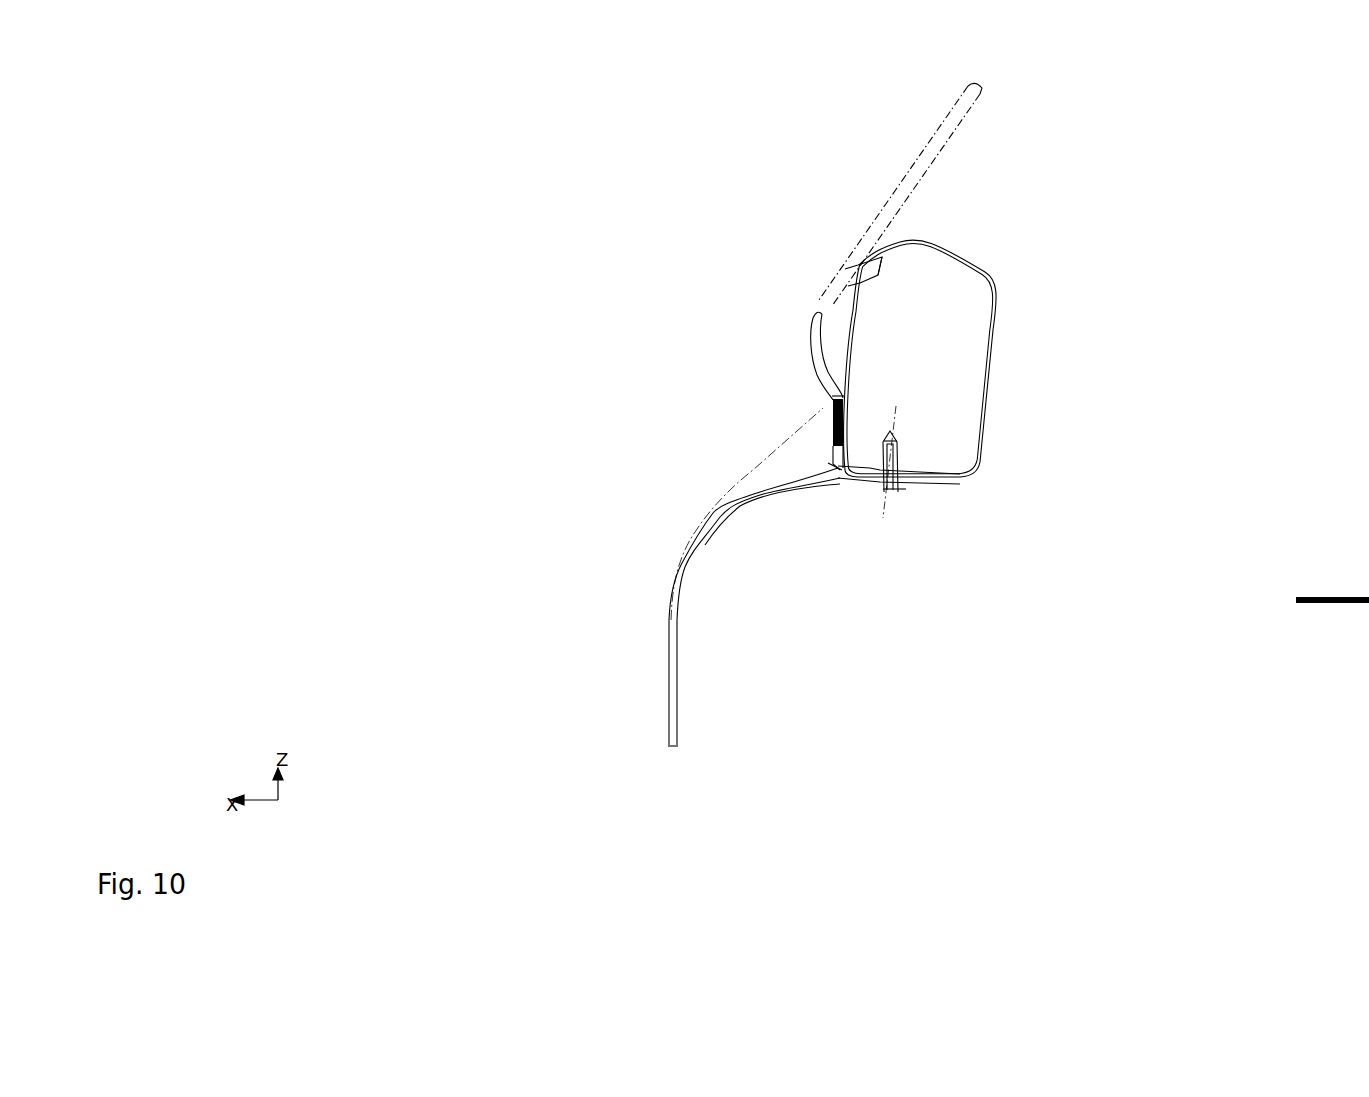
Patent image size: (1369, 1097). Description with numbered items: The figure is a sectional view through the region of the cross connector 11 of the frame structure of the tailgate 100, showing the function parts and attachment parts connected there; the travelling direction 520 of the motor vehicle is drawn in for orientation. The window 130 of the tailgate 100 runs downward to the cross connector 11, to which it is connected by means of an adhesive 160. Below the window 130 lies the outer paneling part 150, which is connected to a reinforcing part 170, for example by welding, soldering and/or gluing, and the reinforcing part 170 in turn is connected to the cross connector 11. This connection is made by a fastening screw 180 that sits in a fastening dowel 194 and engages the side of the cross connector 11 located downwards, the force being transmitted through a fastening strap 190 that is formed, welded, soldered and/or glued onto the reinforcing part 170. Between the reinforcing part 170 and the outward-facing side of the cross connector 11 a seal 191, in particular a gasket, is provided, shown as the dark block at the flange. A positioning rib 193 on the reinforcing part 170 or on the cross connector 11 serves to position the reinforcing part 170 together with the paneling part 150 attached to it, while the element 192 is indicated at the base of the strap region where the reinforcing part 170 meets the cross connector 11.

The tailgate 100 is at (1002, 167).
The cross connector 11 is at (987, 278).
The window 130 is at (938, 135).
The adhesive 160 is at (860, 266).
The outer paneling part 150 is at (671, 659).
The reinforcing part 170 is at (767, 493).
The fastening screw 180 is at (903, 488).
The fastening strap 190 is at (845, 478).
The seal 191 is at (832, 430).
The bracket base 192 is at (838, 468).
The positioning rib 193 is at (838, 393).
The fastening dowel 194 is at (902, 462).
The travelling direction 520 is at (1328, 601).